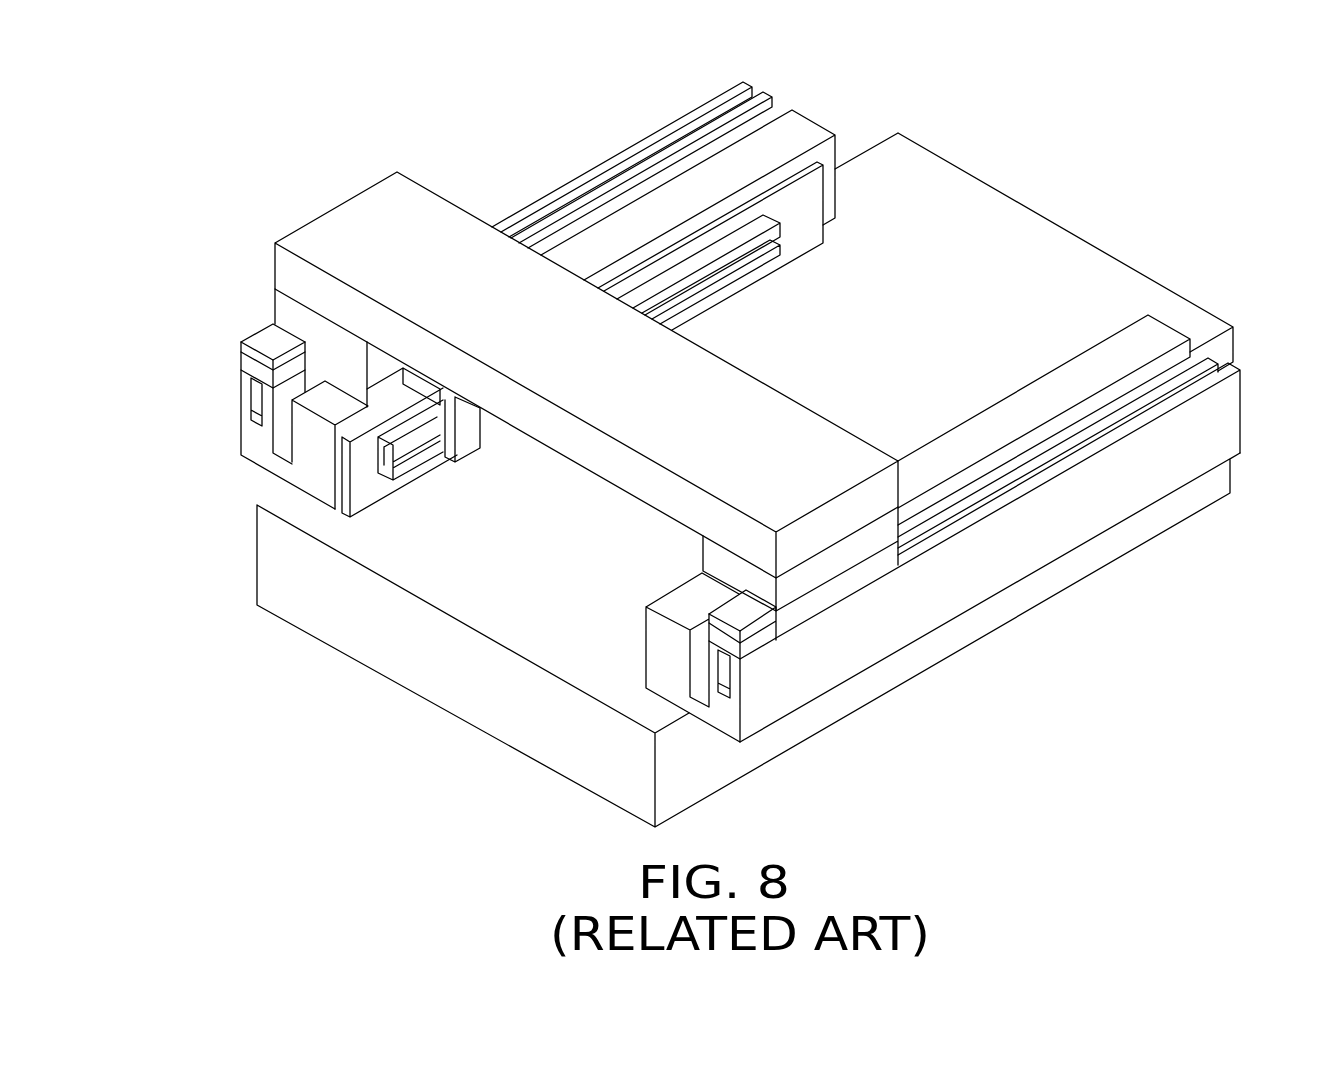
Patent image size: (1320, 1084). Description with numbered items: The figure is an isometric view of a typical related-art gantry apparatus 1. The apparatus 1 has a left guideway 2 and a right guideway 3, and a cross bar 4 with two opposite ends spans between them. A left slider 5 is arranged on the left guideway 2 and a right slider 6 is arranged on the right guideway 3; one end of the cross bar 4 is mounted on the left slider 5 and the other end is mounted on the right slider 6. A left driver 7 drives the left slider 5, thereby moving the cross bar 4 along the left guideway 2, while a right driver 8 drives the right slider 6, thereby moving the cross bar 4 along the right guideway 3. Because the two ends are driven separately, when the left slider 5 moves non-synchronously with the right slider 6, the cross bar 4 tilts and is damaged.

The gantry apparatus 1 is at (612, 77).
The left guideway 2 is at (318, 456).
The right guideway 3 is at (665, 657).
The cross bar 4 is at (355, 233).
The left slider 5 is at (298, 319).
The right slider 6 is at (736, 572).
The left driver 7 is at (265, 342).
The right driver 8 is at (740, 617).